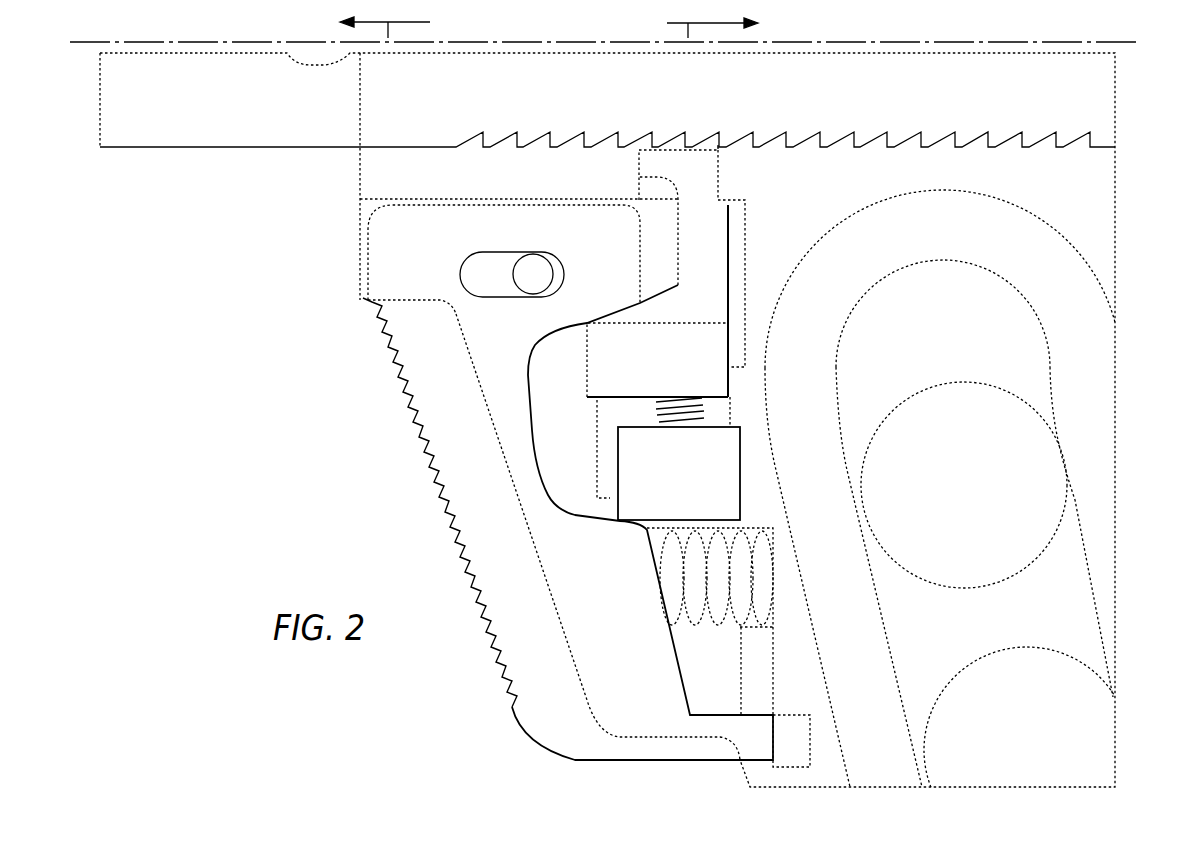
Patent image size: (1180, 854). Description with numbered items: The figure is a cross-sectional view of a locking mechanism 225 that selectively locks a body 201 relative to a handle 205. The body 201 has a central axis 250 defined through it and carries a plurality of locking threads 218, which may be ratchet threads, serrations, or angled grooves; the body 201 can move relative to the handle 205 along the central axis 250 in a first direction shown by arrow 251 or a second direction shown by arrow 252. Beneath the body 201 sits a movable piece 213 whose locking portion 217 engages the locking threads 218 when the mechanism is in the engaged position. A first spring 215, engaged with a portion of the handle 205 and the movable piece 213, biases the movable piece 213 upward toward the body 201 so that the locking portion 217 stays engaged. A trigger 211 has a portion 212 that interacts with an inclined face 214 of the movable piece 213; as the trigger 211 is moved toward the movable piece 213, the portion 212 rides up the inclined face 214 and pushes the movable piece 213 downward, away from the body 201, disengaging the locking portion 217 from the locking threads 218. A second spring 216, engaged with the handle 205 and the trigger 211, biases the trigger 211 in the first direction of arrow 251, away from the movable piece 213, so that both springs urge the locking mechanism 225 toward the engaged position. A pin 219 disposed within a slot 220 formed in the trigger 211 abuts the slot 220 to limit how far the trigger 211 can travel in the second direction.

The body 201 is at (460, 112).
The handle 205 is at (1073, 198).
The trigger 211 is at (454, 443).
The portion of the trigger 212 is at (640, 255).
The movable piece 213 is at (738, 284).
The inclined face 214 is at (672, 290).
The first spring 215 is at (700, 420).
The second spring 216 is at (720, 623).
The locking portion 217 is at (730, 133).
The locking threads 218 is at (673, 133).
The pin 219 is at (540, 282).
The slot 220 is at (492, 265).
The locking mechanism 225 is at (347, 422).
The central axis 250 is at (1127, 43).
The arrow 251 is at (380, 53).
The arrow 252 is at (685, 50).